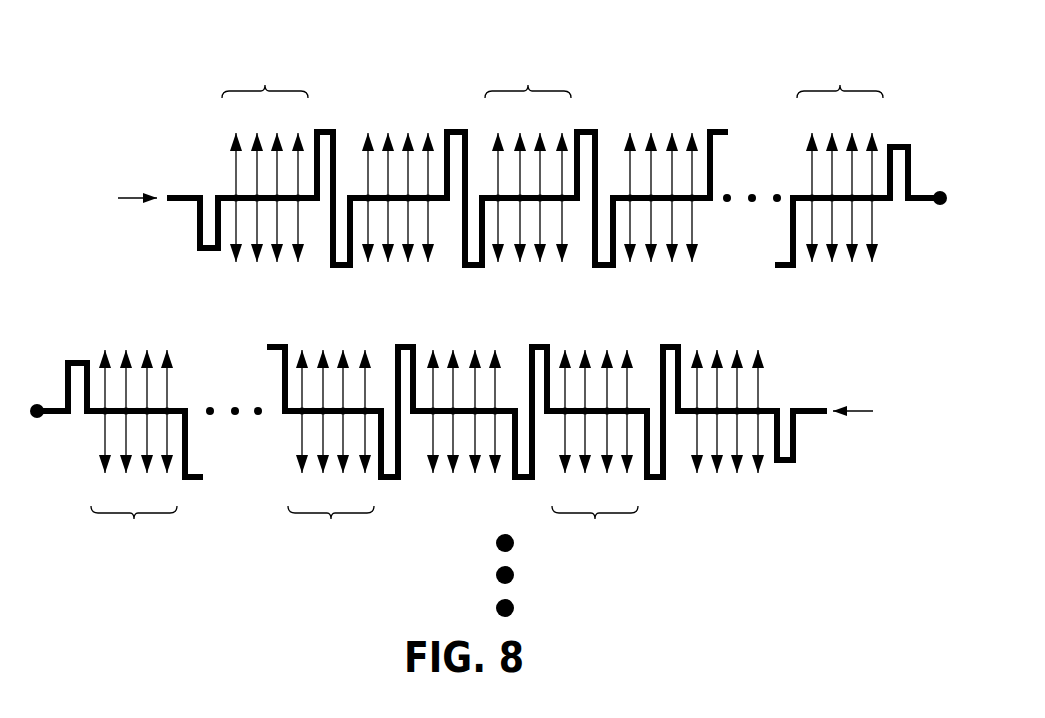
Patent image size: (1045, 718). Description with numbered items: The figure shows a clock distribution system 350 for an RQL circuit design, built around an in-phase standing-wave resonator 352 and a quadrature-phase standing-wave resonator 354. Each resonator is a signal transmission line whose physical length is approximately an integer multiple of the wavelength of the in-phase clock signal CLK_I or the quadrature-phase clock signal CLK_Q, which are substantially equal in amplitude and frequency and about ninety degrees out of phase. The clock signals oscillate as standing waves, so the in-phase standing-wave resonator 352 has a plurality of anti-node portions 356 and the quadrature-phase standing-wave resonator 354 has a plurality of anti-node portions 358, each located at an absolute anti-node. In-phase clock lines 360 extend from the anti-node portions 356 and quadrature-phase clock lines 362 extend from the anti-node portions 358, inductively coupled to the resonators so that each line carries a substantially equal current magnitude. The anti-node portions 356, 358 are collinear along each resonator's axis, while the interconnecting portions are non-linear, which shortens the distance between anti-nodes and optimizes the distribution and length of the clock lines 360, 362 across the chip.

The clock distribution system 350 is at (133, 65).
The in-phase standing-wave resonator 352 is at (150, 165).
The quadrature-phase standing-wave resonator 354 is at (832, 368).
The anti-node portions 356 is at (247, 79).
The anti-node portions 358 is at (118, 551).
The in-phase clock lines 360 is at (227, 143).
The quadrature-phase clock lines 362 is at (465, 510).